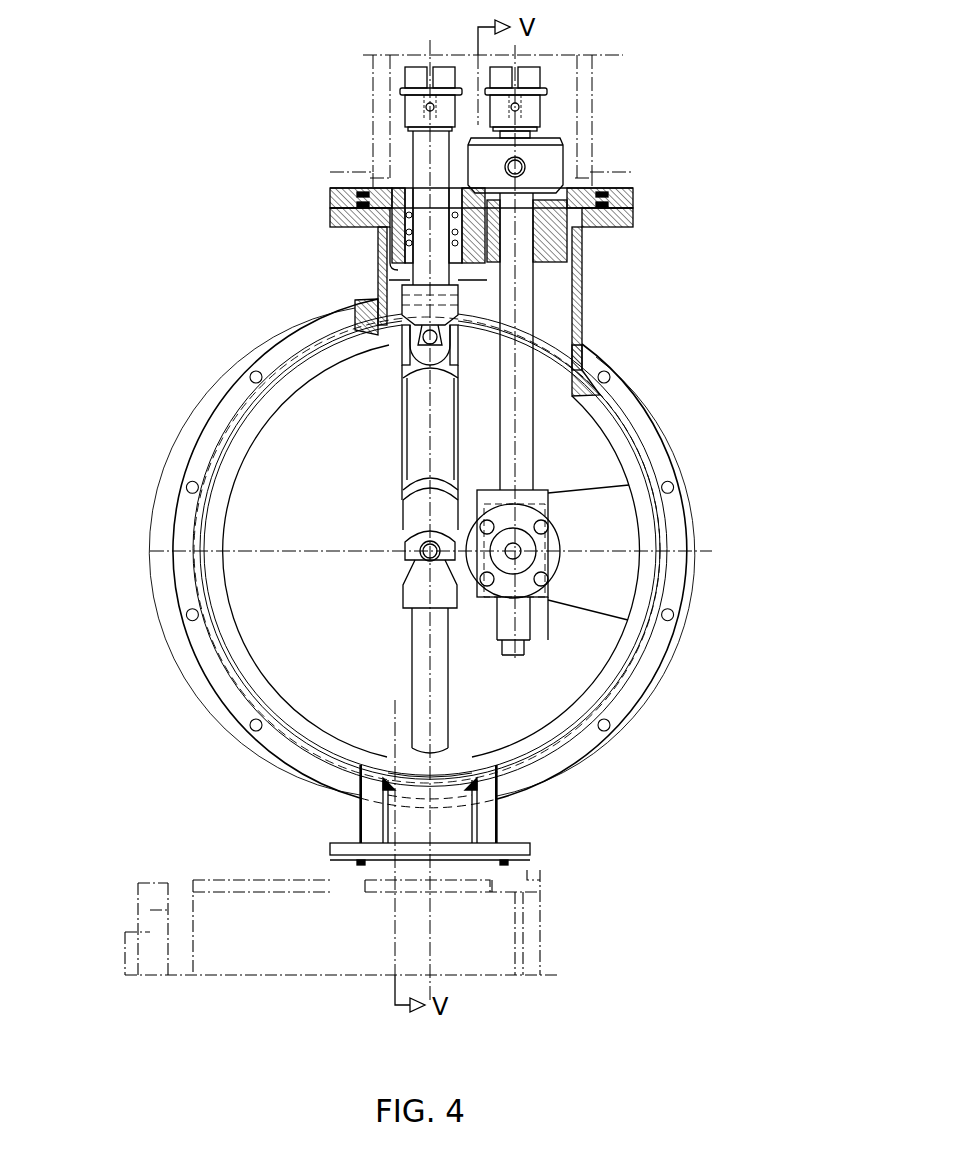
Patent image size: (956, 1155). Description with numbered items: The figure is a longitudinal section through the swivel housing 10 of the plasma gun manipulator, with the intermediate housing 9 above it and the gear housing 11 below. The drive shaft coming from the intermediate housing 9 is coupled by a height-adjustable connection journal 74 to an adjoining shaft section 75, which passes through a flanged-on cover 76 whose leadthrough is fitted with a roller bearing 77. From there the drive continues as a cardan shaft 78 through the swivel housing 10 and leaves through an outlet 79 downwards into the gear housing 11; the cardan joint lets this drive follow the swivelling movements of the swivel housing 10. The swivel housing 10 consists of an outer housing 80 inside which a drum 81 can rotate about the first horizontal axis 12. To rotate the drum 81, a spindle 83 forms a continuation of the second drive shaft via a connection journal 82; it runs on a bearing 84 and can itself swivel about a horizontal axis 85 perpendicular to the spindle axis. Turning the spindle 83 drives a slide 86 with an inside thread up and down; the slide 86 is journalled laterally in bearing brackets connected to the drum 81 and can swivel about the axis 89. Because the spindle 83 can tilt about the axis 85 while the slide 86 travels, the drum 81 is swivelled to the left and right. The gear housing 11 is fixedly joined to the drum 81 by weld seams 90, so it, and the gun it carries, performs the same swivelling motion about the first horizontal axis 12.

The intermediate housing 9 is at (480, 228).
The swivel housing 10 is at (460, 570).
The gear housing 11 is at (485, 935).
The first horizontal axis 12 is at (428, 555).
The connection journal 74 is at (412, 108).
The shaft section 75 is at (428, 150).
The flanged-on cover 76 is at (393, 203).
The roller bearing 77 is at (433, 247).
The cardan shaft 78 is at (385, 460).
The outlet 79 is at (445, 805).
The outer housing 80 is at (683, 578).
The drum 81 is at (645, 530).
The connection journal 82 is at (533, 108).
The spindle 83 is at (578, 287).
The bearing 84 is at (595, 146).
The horizontal axis 85 is at (517, 168).
The slide 86 is at (616, 528).
The axis 89 is at (515, 555).
The weld seams 90 is at (495, 775).